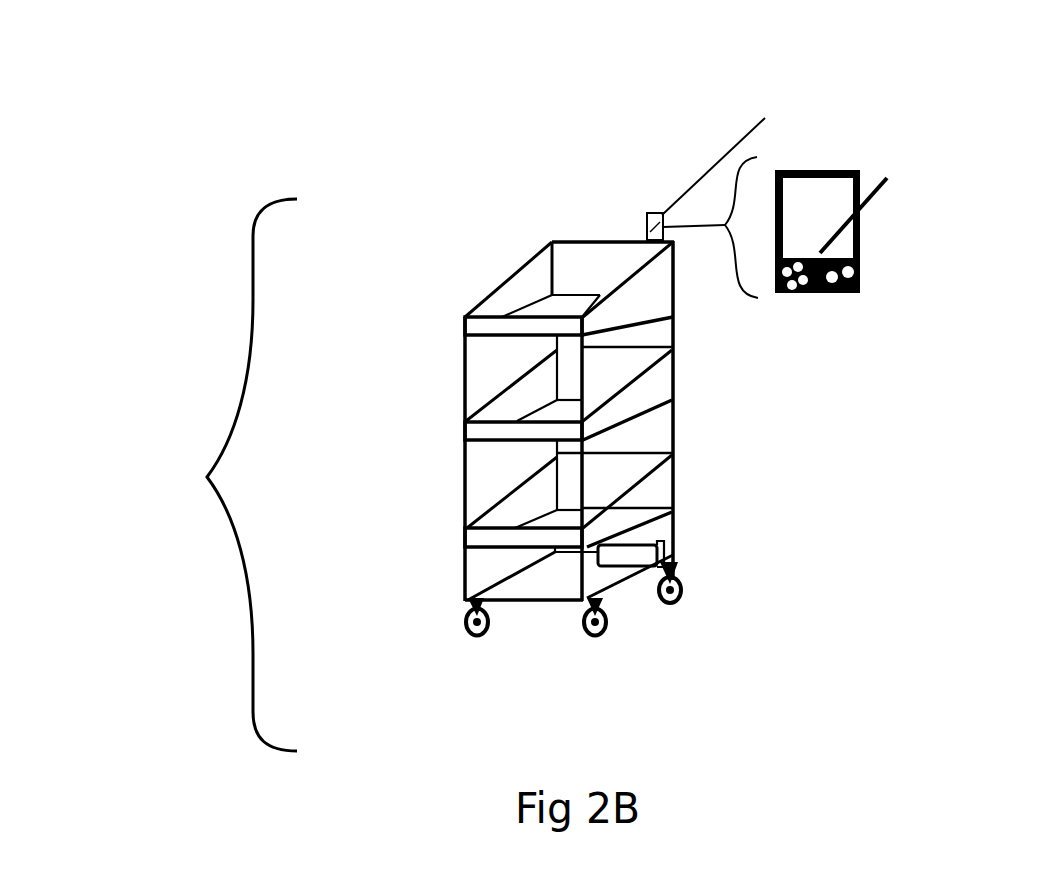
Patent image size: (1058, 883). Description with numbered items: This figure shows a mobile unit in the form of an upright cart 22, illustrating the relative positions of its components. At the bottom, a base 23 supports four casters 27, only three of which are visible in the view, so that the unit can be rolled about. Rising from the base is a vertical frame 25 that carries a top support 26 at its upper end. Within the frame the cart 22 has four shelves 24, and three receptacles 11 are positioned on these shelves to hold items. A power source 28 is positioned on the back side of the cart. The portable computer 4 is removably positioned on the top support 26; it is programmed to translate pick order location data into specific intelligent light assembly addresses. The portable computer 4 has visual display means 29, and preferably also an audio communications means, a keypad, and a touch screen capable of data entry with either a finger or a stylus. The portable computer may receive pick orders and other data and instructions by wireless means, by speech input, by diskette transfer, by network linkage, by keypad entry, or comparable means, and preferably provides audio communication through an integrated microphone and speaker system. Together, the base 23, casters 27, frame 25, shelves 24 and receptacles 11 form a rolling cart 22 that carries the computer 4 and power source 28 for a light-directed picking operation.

The upright cart 22 is at (198, 477).
The top support 26 is at (552, 242).
The receptacles 11 is at (504, 283).
The shelves 24 is at (465, 336).
The vertical frame 25 is at (674, 383).
The power source 28 is at (655, 537).
The base 23 is at (673, 560).
The casters 27 is at (667, 604).
The portable computer 4 is at (831, 172).
The visual display means 29 is at (826, 192).